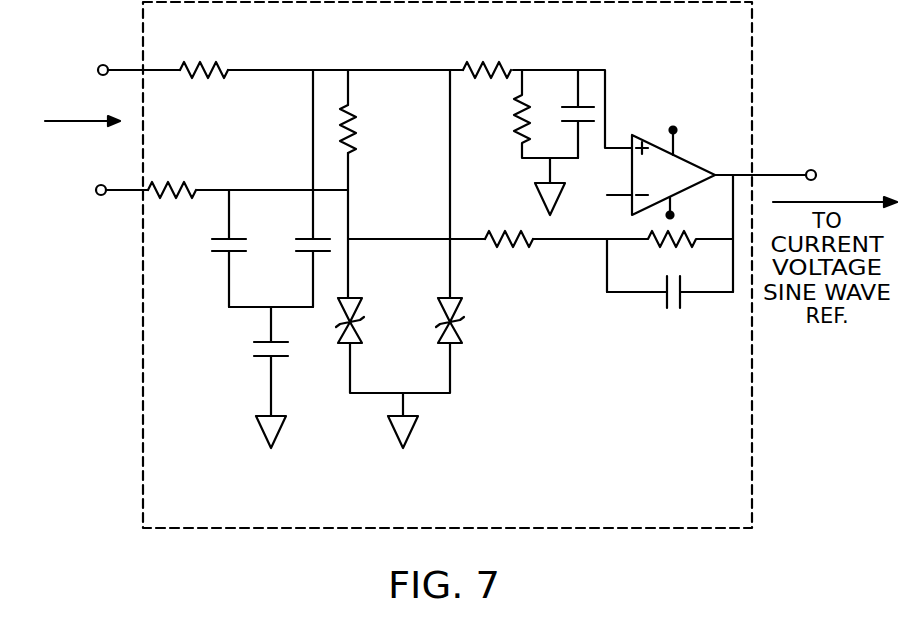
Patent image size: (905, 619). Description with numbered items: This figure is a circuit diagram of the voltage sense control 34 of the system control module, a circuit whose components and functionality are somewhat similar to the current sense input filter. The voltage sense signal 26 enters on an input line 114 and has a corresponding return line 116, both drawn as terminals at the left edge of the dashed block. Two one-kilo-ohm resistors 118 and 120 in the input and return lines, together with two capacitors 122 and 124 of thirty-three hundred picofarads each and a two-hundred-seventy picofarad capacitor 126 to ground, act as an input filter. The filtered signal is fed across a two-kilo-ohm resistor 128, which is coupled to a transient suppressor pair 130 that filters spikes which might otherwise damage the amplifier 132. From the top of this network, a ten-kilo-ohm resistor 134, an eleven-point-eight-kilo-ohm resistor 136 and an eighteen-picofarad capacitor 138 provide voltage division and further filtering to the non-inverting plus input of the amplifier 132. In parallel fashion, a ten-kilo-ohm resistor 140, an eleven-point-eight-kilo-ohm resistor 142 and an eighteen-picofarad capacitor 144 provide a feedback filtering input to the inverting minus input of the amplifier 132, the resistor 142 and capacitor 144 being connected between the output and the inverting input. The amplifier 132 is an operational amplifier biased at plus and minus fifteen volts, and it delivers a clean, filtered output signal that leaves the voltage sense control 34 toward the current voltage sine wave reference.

The voltage sense signal 26 is at (72, 120).
The voltage sense control 34 is at (753, 447).
The input line 114 is at (115, 68).
The return line 116 is at (128, 192).
The resistor 118 is at (215, 68).
The resistor 120 is at (188, 183).
The capacitor 122 is at (212, 247).
The capacitor 124 is at (297, 247).
The capacitor 126 is at (253, 353).
The resistor 128 is at (358, 121).
The transient suppressor pair 130 is at (401, 326).
The amplifier 132 is at (642, 135).
The resistor 134 is at (508, 58).
The resistor 136 is at (512, 118).
The capacitor 138 is at (567, 112).
The resistor 140 is at (516, 247).
The resistor 142 is at (672, 248).
The capacitor 144 is at (674, 310).